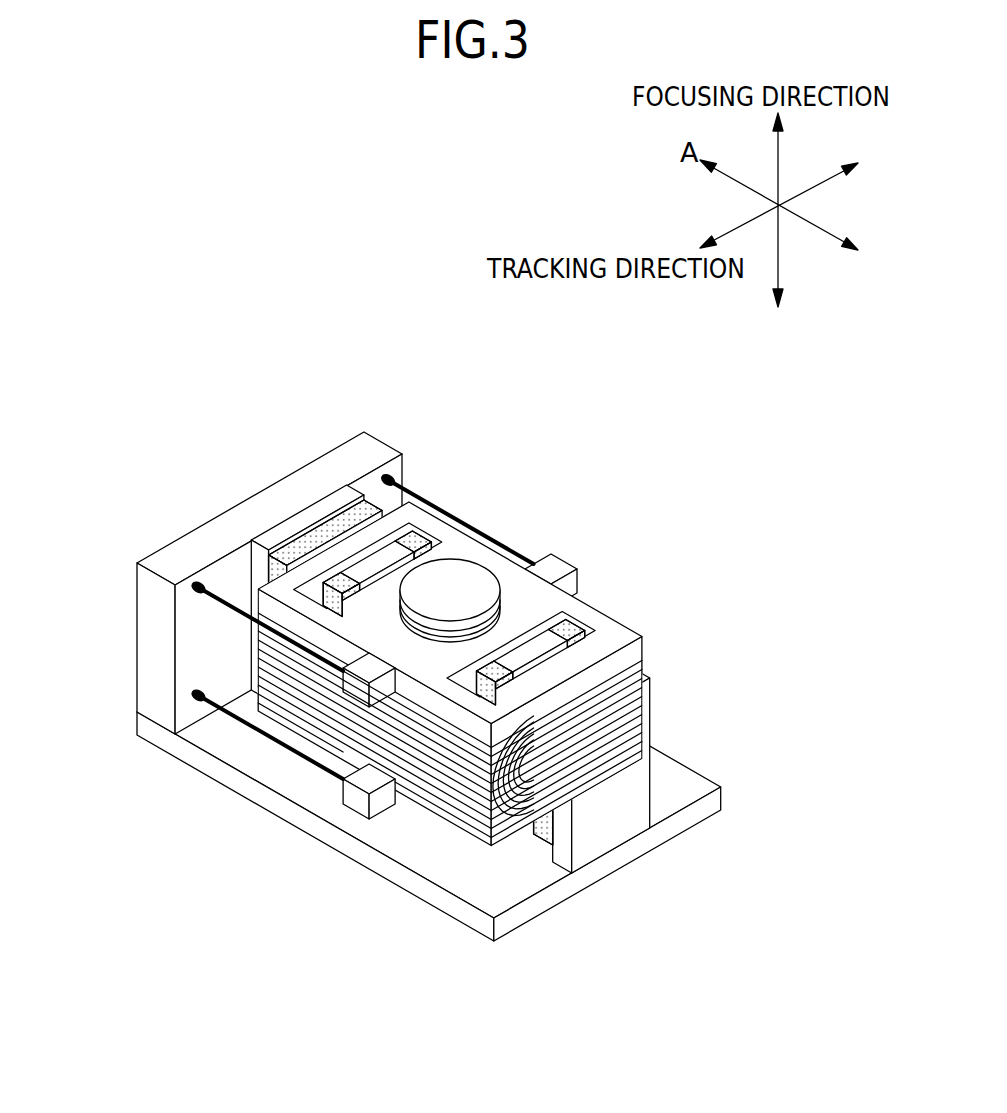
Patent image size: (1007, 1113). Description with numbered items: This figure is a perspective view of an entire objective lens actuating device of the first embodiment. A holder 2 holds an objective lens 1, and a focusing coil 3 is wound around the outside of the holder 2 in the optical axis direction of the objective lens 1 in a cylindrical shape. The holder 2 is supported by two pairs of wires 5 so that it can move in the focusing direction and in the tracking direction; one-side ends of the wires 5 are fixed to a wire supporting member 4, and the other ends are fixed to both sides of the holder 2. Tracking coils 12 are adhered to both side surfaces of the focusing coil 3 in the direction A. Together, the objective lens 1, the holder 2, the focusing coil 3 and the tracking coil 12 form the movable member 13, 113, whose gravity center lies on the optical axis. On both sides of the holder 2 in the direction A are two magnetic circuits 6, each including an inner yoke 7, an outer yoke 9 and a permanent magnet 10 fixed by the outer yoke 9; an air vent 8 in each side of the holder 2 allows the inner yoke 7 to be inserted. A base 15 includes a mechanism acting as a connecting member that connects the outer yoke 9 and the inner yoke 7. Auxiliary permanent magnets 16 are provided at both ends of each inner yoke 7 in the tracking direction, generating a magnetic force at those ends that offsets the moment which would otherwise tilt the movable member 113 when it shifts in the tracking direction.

The objective lens 1 is at (468, 580).
The holder 2 is at (503, 639).
The focusing coil 3 is at (428, 778).
The wire supporting member 4 is at (250, 507).
The wires 5 is at (463, 522).
The magnetic circuit 6 is at (569, 594).
The inner yoke 7 is at (592, 543).
The air vent 8 is at (427, 543).
The outer yoke 9 is at (295, 520).
The permanent magnet 10 is at (331, 520).
The tracking coil 12 is at (518, 797).
The movable member 13 is at (407, 705).
The base 15 is at (222, 775).
The auxiliary permanent magnet 16 is at (409, 540).
The movable member 113 is at (177, 306).